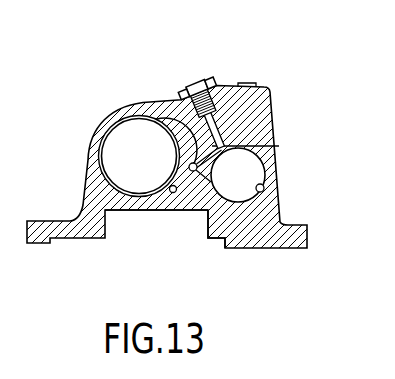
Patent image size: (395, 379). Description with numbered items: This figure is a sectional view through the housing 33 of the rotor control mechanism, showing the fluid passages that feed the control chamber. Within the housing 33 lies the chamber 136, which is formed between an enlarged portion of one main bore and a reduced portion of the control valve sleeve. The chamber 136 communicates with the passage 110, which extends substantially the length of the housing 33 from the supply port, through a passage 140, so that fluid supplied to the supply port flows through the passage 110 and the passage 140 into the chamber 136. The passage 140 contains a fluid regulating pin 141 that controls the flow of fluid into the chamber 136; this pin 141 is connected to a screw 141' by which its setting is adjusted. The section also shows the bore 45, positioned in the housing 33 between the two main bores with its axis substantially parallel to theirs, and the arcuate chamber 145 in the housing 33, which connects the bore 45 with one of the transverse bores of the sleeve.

The passage 110 is at (265, 87).
The passage 140 is at (228, 143).
The fluid regulating pin 141 is at (272, 151).
The screw 141' is at (199, 93).
The chamber 136 is at (264, 187).
The housing 33 is at (119, 213).
The arcuate chamber 145 is at (190, 170).
The bore 45 is at (208, 213).